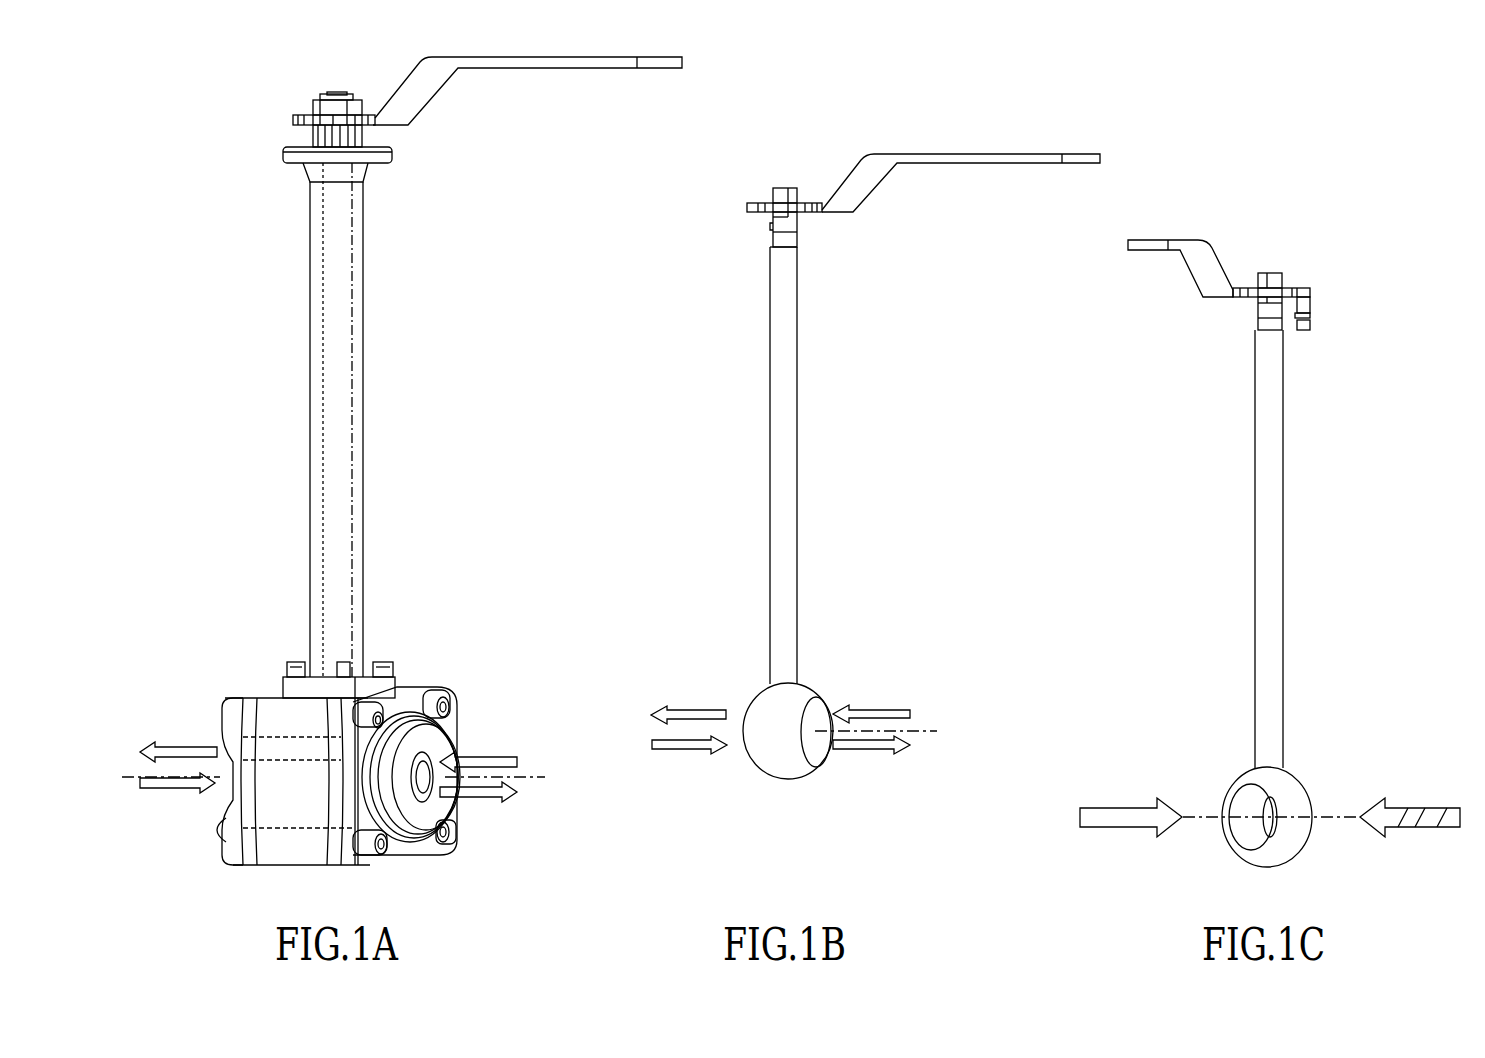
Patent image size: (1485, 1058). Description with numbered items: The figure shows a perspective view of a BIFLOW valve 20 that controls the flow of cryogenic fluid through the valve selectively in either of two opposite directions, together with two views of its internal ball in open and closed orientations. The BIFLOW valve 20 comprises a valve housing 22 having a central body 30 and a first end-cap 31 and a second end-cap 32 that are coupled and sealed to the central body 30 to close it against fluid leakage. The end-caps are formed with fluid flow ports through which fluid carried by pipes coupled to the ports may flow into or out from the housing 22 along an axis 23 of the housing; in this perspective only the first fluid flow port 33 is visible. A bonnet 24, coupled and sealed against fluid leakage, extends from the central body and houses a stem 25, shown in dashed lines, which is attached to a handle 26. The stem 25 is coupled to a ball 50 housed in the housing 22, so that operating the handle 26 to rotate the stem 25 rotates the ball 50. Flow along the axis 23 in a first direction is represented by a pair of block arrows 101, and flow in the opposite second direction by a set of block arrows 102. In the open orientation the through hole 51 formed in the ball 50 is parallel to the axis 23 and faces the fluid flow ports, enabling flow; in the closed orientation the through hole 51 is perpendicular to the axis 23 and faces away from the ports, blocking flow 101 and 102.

In FIG. 1A, the BIFLOW valve 20 is at (196, 479).
In FIG. 1A, the valve housing 22 is at (335, 754).
In FIG. 1A, the axis 23 is at (517, 778).
In FIG. 1B, the axis 23 is at (912, 730).
In FIG. 1C, the axis 23 is at (1323, 818).
In FIG. 1A, the bonnet 24 is at (358, 384).
In FIG. 1A, the stem 25 is at (337, 390).
In FIG. 1B, the stem 25 is at (778, 463).
In FIG. 1C, the stem 25 is at (1264, 492).
In FIG. 1A, the handle 26 is at (405, 104).
In FIG. 1A, the central body 30 is at (310, 797).
In FIG. 1A, the first end-cap 31 is at (352, 815).
In FIG. 1A, the second end-cap 32 is at (242, 818).
In FIG. 1A, the first fluid flow port 33 is at (423, 768).
In FIG. 1B, the ball 50 is at (790, 746).
In FIG. 1C, the ball 50 is at (1306, 807).
In FIG. 1B, the through hole 51 is at (812, 715).
In FIG. 1C, the through hole 51 is at (1248, 805).
In FIG. 1A, the block arrows 101 is at (153, 757).
In FIG. 1B, the block arrows 101 is at (688, 712).
In FIG. 1C, the block arrows 101 is at (1420, 815).
In FIG. 1A, the block arrows 102 is at (182, 785).
In FIG. 1B, the block arrows 102 is at (708, 745).
In FIG. 1C, the block arrows 102 is at (1127, 813).